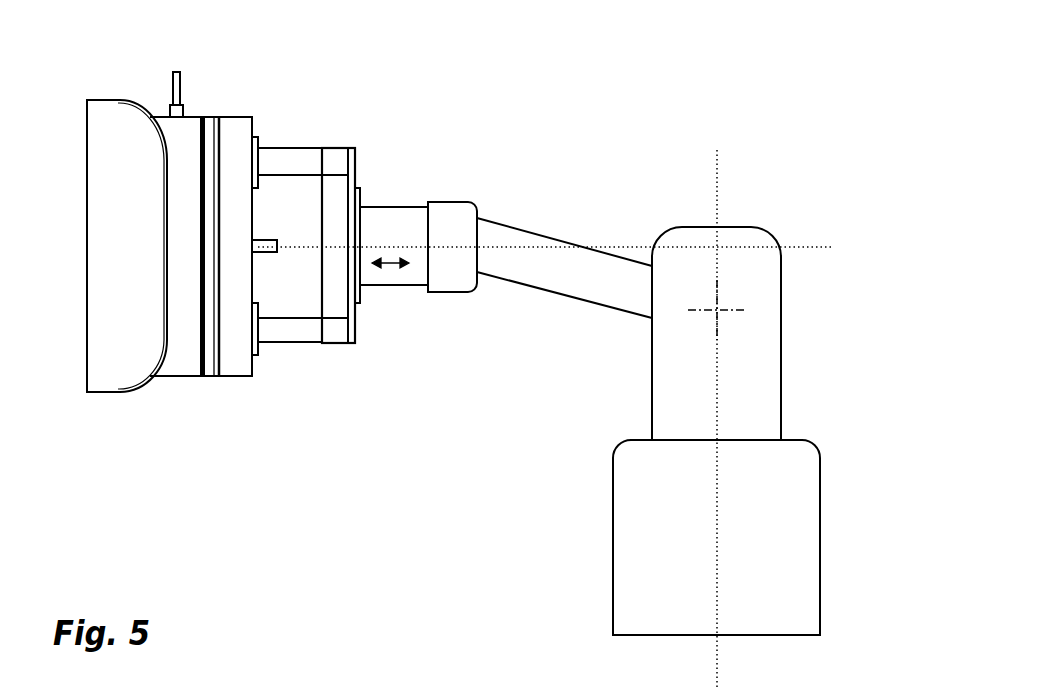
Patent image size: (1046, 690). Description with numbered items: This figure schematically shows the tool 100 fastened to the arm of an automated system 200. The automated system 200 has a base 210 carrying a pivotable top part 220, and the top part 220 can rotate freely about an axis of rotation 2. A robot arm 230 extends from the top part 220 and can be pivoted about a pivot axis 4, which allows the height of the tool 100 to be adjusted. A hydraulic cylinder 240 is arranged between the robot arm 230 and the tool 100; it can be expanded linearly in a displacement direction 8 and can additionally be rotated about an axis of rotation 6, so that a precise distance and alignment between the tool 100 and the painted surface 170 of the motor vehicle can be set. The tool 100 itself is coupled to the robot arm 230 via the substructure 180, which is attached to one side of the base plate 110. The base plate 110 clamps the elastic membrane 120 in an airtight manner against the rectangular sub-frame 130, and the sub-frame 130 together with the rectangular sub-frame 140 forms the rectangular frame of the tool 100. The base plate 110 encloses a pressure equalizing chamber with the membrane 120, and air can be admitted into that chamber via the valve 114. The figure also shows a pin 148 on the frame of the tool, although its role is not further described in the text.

The axis of rotation 2 is at (720, 186).
The pivot axis 4 is at (720, 308).
The axis of rotation 6 is at (812, 248).
The displacement direction 8 is at (390, 267).
The tool 100 is at (232, 252).
The base plate 110 is at (237, 353).
The valve 114 is at (273, 247).
The elastic membrane 120 is at (235, 355).
The rectangular sub-frame 130 is at (208, 145).
The rectangular sub-frame 140 is at (177, 365).
The connector pin 148 is at (171, 83).
The painted surface 170 is at (123, 353).
The substructure 180 is at (282, 332).
The automated system 200 is at (616, 431).
The base 210 is at (642, 553).
The pivotable top part 220 is at (667, 370).
The robot arm 230 is at (517, 240).
The hydraulic cylinder 240 is at (390, 240).